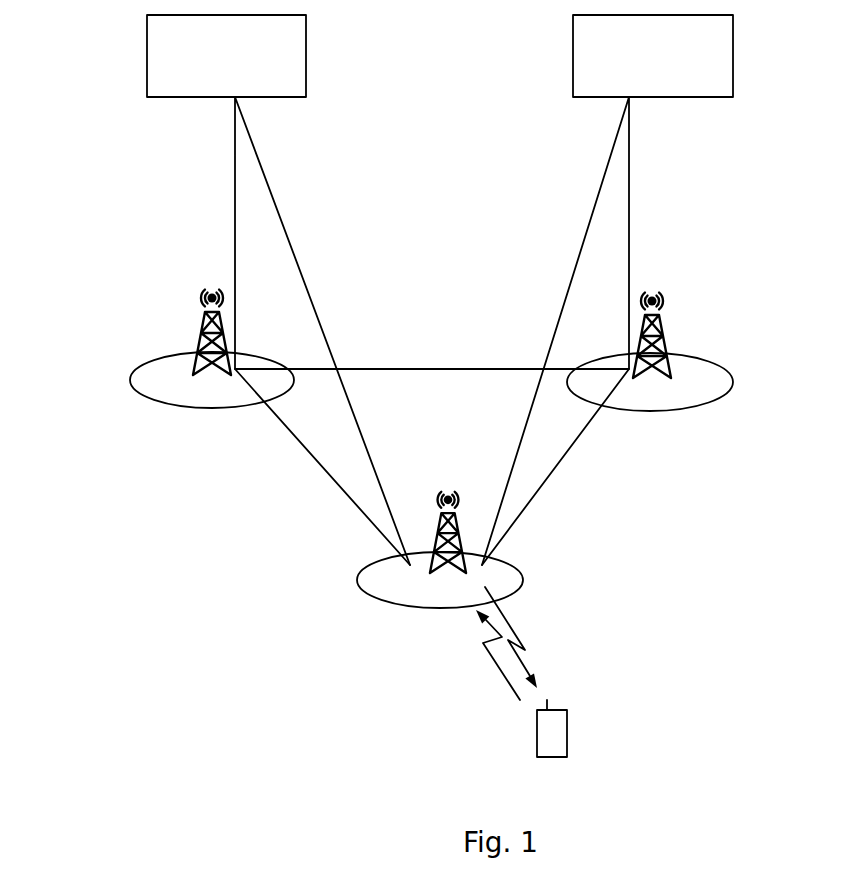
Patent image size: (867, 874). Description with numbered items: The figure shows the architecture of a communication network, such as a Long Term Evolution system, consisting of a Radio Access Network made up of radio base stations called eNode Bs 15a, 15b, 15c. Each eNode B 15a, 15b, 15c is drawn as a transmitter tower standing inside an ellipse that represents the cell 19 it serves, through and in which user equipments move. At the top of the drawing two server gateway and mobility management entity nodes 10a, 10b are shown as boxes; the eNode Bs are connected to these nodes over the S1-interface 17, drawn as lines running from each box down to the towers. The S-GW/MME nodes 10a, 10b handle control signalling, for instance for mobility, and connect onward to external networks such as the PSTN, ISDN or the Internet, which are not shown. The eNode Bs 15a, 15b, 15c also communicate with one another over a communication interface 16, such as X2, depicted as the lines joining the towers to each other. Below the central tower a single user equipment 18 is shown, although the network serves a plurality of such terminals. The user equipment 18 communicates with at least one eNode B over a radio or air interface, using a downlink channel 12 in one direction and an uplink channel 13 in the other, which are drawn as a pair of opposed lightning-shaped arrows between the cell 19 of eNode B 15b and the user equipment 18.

The server gateway and mobility management entity node 10a is at (226, 56).
The server gateway and mobility management entity node 10b is at (653, 56).
The downlink channel 12 is at (510, 622).
The uplink channel 13 is at (502, 678).
The eNode B 15a is at (202, 325).
The eNode B 15b is at (432, 568).
The eNode B 15c is at (663, 325).
The communication interface 16 is at (410, 368).
The S1-interface 17 is at (235, 203).
The user equipment 18 is at (567, 733).
The cell 19 is at (130, 370).